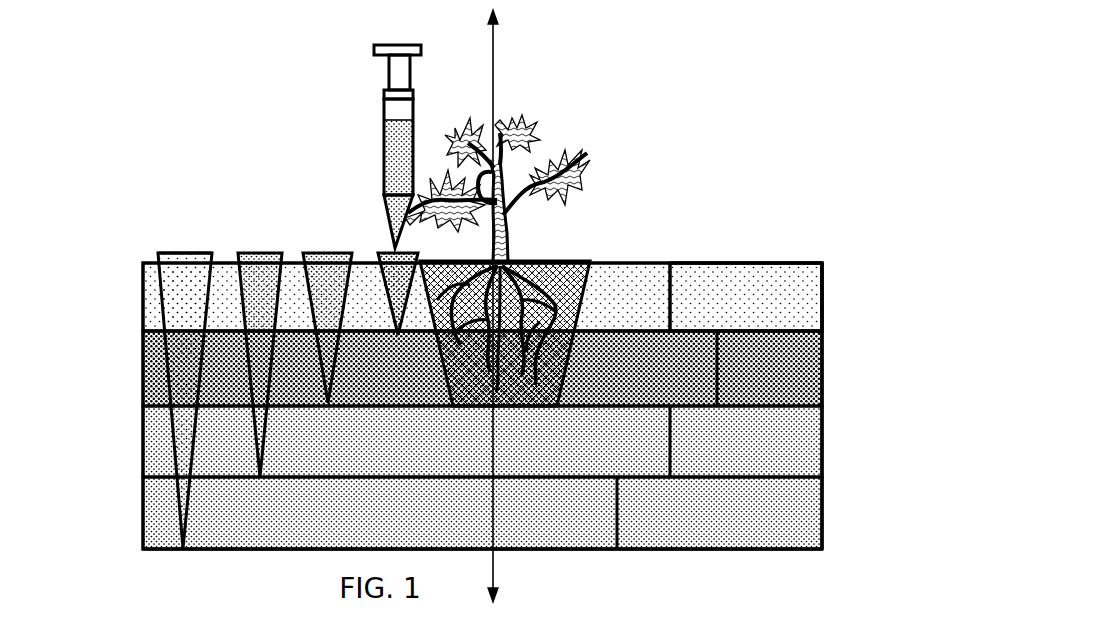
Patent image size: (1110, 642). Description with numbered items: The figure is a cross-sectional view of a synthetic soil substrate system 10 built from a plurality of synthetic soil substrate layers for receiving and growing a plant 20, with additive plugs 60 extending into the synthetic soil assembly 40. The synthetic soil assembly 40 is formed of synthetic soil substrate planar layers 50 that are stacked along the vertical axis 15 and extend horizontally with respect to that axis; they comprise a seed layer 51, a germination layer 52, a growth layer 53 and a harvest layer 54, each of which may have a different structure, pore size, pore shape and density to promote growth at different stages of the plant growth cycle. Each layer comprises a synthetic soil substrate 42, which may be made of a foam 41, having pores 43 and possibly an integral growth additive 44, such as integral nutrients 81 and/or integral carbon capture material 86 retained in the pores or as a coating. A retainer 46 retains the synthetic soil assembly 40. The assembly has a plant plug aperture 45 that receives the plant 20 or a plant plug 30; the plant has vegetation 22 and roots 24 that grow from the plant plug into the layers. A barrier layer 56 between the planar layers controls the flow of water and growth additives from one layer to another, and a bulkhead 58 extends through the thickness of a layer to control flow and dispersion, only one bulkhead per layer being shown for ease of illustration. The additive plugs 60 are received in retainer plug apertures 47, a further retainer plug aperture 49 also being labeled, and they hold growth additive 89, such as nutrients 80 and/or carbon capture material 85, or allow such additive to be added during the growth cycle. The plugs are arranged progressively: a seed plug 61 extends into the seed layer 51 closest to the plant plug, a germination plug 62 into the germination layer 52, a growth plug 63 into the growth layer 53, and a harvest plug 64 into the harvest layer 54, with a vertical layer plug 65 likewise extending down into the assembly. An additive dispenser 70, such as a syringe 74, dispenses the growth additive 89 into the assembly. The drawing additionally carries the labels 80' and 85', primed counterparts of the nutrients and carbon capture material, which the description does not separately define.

The synthetic soil substrate system 10 is at (702, 118).
The vertical axis 15 is at (500, 62).
The plant 20 is at (585, 151).
The vegetation 22 is at (520, 110).
The roots 24 is at (515, 252).
The plant plug 30 is at (590, 260).
The synthetic soil assembly 40 is at (740, 272).
The foam 41 is at (788, 544).
The synthetic soil substrate 42 is at (775, 272).
The pores 43 is at (800, 278).
The integral growth additive 44 is at (805, 286).
The plant plug aperture 45 is at (580, 303).
The retainer 46 is at (822, 485).
The retainer plug apertures 47 is at (220, 262).
The radial retainer plug aperture 49 is at (300, 260).
The synthetic soil substrate planar layers 50 is at (775, 390).
The seed layer 51 is at (773, 317).
The germination layer 52 is at (790, 353).
The growth layer 53 is at (775, 445).
The harvest layer 54 is at (780, 525).
The barrier layer 56 is at (162, 475).
The bulkhead 58 is at (618, 527).
The additive plugs 60 is at (178, 322).
The seed plug 61 is at (387, 251).
The germination plug 62 is at (336, 256).
The growth plug 63 is at (262, 265).
The harvest plug 64 is at (170, 265).
The vertical layer plug 65 is at (178, 290).
The additive dispenser 70 is at (395, 100).
The syringe 74 is at (398, 68).
The nutrients 80 is at (421, 131).
The second layer left block 80' is at (401, 368).
The integral nutrients 81 is at (735, 548).
The carbon capture material 85 is at (426, 170).
The third layer divider 85' is at (376, 441).
The integral carbon capture material 86 is at (645, 537).
The growth additive 89 is at (387, 128).